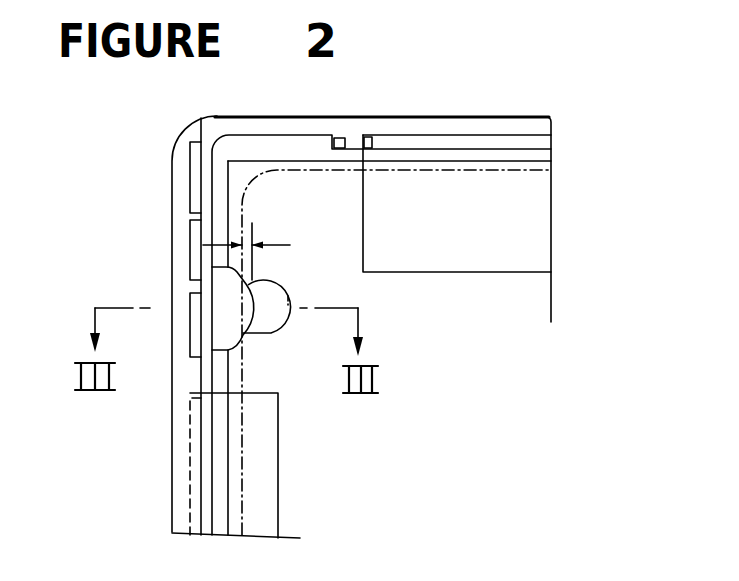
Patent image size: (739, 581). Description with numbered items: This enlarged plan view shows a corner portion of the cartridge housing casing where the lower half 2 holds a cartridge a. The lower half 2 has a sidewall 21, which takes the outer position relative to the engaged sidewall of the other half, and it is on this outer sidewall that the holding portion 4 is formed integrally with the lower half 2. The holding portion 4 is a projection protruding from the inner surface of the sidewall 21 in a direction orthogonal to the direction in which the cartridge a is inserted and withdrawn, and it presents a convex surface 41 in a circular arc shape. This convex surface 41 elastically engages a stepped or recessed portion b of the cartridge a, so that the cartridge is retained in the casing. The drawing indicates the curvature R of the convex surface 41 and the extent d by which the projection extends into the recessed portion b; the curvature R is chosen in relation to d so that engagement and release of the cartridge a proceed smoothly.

The lower half 2 is at (218, 116).
The sidewall of lower half 21 is at (200, 438).
The holding portion 4 is at (226, 321).
The convex surface 41 is at (279, 296).
The cartridge a is at (268, 172).
The stepped or recessed portion b is at (272, 335).
The extent of projection d is at (246, 243).
The curvature of convex surface R is at (230, 281).